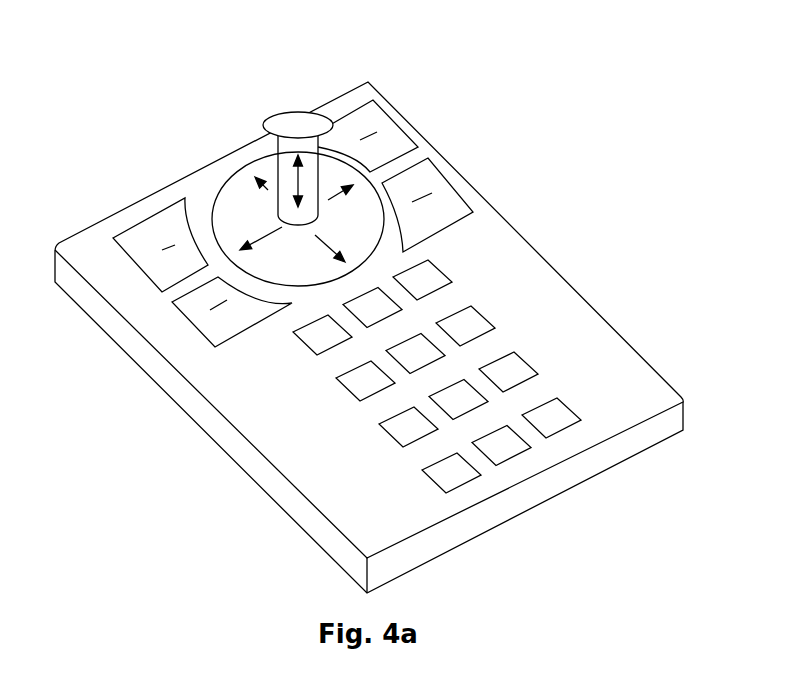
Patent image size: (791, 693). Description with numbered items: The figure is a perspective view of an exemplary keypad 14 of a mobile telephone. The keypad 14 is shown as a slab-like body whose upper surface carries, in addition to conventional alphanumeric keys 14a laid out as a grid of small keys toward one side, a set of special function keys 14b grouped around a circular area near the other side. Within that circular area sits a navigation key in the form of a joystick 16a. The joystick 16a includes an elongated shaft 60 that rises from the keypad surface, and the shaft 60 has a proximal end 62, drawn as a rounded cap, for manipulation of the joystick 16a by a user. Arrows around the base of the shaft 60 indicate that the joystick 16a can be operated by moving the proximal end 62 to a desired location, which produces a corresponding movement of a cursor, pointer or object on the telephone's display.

The keypad 14 is at (205, 503).
The alphanumeric keys 14a is at (517, 292).
The special function keys 14b is at (238, 363).
The joystick 16a is at (246, 118).
The elongated shaft 60 is at (307, 142).
The proximal end 62 is at (287, 107).